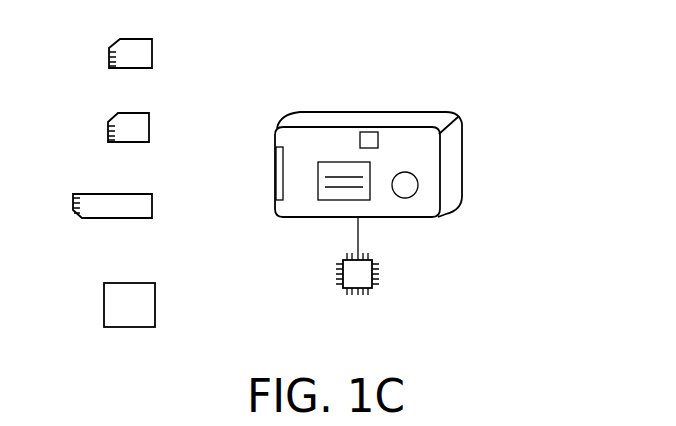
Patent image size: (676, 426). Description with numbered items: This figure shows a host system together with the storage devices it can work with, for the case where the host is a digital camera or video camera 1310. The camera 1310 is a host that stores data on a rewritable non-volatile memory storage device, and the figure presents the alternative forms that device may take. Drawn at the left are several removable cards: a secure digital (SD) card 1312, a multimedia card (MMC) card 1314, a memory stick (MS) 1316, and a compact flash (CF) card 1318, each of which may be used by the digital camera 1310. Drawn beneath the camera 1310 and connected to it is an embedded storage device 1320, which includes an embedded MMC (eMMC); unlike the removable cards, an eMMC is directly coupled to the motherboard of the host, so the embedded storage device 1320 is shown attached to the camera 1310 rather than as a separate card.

The digital camera 1310 is at (463, 148).
The secure digital (SD) card 1312 is at (153, 43).
The multimedia card (MMC) card 1314 is at (153, 118).
The memory stick (MS) 1316 is at (155, 207).
The compact flash (CF) card 1318 is at (155, 297).
The embedded storage device 1320 is at (376, 275).